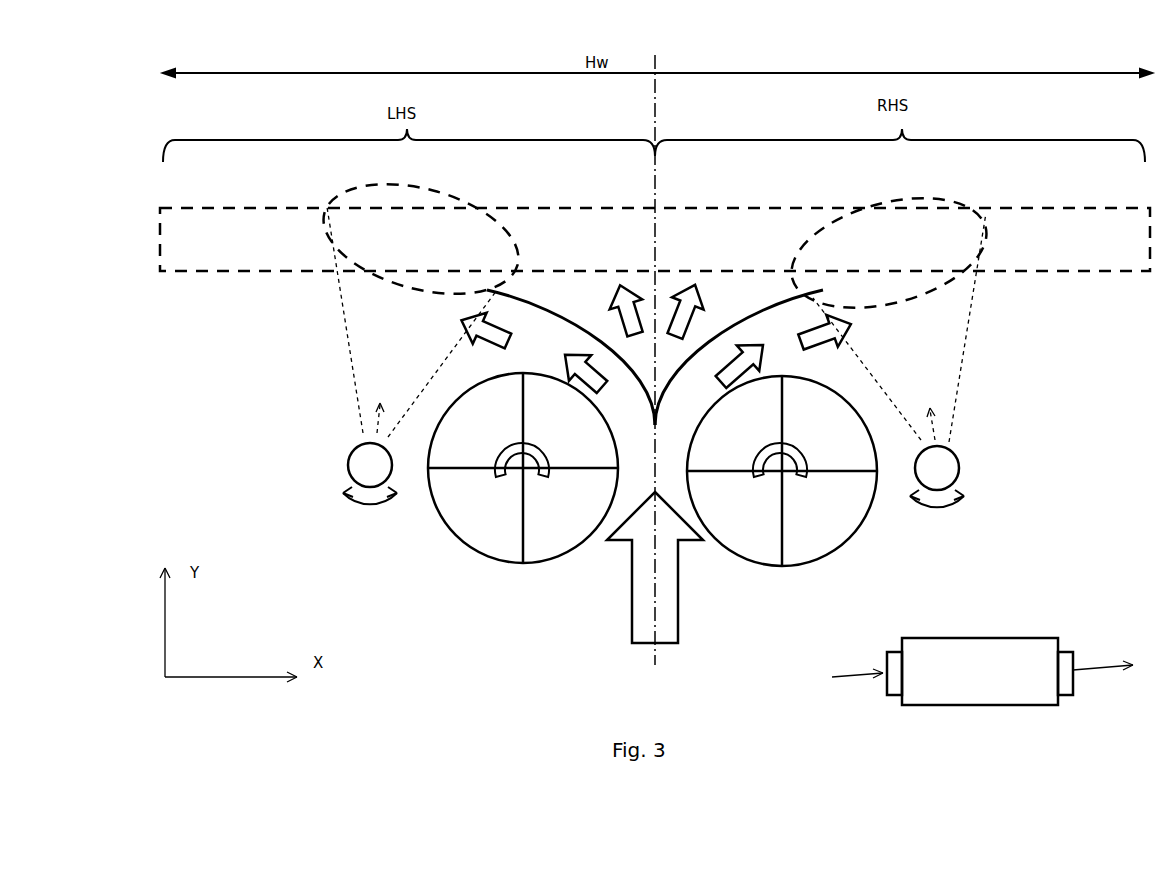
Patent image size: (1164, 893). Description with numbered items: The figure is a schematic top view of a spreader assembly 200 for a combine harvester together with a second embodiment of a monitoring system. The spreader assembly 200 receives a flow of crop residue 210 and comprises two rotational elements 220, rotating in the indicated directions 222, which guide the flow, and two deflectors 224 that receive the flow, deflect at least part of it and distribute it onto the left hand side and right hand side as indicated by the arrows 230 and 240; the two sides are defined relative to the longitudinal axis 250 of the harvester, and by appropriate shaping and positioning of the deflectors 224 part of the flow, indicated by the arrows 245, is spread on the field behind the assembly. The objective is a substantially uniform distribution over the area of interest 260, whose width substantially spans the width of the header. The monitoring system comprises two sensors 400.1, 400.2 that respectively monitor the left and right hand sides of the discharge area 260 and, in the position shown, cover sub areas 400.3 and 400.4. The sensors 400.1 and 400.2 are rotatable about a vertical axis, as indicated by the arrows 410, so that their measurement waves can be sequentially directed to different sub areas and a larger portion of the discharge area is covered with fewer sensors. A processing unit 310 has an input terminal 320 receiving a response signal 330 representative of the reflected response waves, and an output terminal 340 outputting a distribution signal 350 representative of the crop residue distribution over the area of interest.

The spreader assembly 200 is at (425, 562).
The flow of crop residue 210 is at (643, 607).
The rotational elements 220 is at (440, 505).
The rotation directions 222 is at (536, 445).
The deflectors 224 is at (547, 304).
The left hand side distribution arrows 230 is at (500, 348).
The right hand side distribution arrows 240 is at (818, 336).
The rearward flow arrows 245 is at (688, 320).
The longitudinal axis 250 is at (655, 110).
The area of interest 260 is at (627, 207).
The processing unit 310 is at (992, 638).
The input terminal 320 is at (888, 660).
The response signal 330 is at (860, 676).
The output terminal 340 is at (1074, 656).
The distribution signal 350 is at (1094, 672).
The first sensor 400.1 is at (360, 458).
The second sensor 400.2 is at (945, 460).
The left sub area 400.3 is at (440, 195).
The right sub area 400.4 is at (918, 199).
The rotation arrows 410 is at (358, 502).